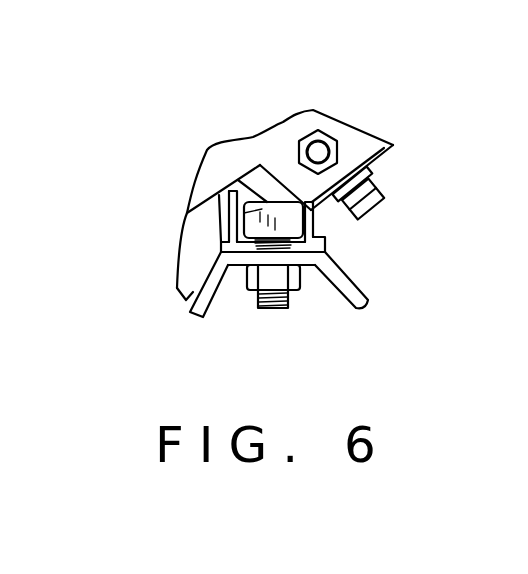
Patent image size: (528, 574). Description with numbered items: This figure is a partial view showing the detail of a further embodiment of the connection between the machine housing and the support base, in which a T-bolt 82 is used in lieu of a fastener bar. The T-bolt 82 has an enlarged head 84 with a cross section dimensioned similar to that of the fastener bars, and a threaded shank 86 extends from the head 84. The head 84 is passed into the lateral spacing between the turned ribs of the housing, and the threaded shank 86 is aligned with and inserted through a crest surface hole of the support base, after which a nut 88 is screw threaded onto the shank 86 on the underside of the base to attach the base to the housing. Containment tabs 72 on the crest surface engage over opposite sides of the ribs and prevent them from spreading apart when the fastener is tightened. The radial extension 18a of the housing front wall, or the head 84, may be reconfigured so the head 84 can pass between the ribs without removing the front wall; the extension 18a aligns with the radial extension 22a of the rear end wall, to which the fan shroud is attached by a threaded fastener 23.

The radial extension 18a is at (350, 143).
The radial extension 22a is at (265, 188).
The threaded fastener 23 is at (372, 207).
The containment tab 72 is at (218, 242).
The T-bolt 82 is at (334, 237).
The enlarged head 84 is at (219, 195).
The threaded shank 86 is at (254, 296).
The nut 88 is at (300, 282).